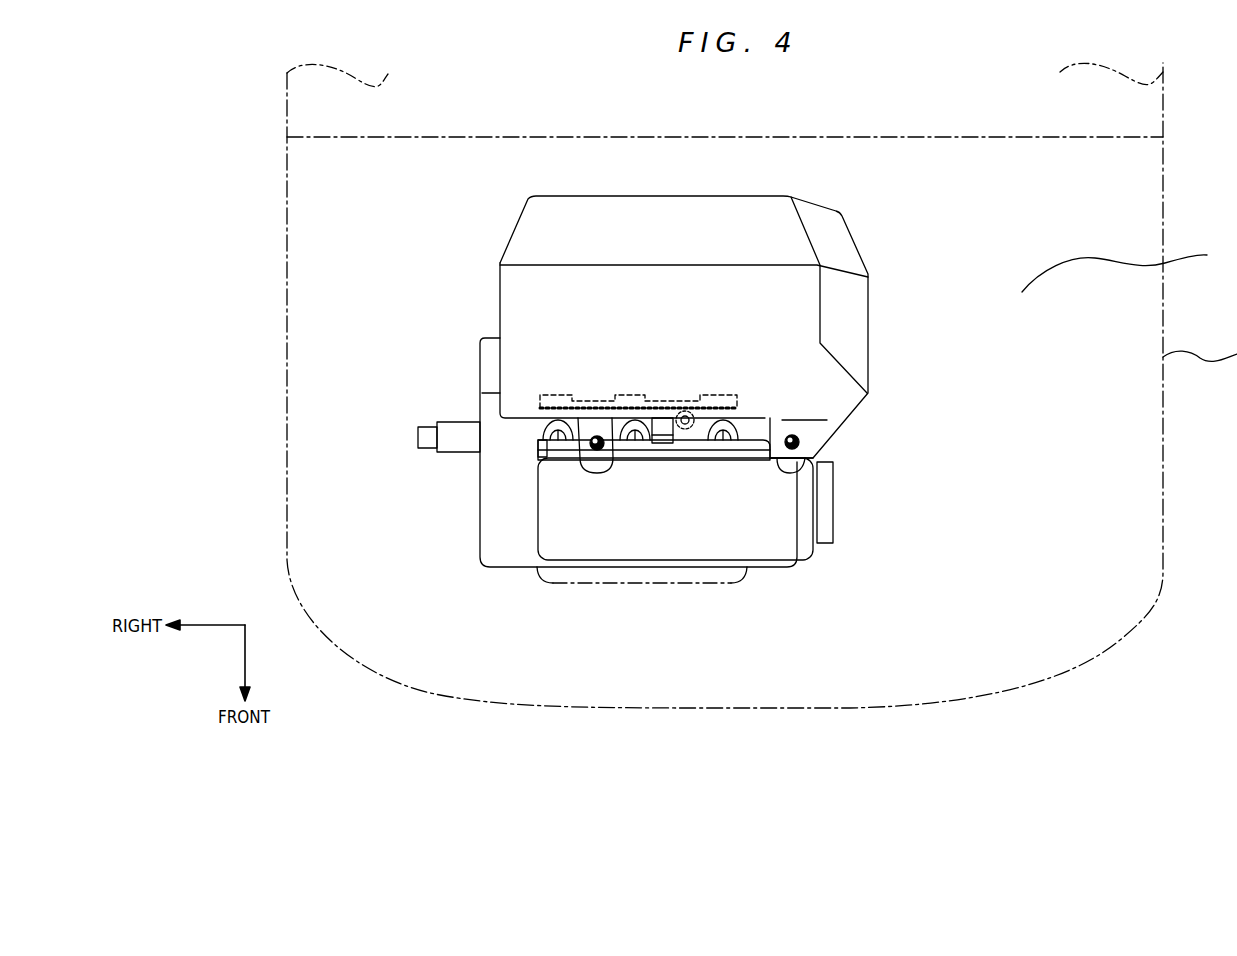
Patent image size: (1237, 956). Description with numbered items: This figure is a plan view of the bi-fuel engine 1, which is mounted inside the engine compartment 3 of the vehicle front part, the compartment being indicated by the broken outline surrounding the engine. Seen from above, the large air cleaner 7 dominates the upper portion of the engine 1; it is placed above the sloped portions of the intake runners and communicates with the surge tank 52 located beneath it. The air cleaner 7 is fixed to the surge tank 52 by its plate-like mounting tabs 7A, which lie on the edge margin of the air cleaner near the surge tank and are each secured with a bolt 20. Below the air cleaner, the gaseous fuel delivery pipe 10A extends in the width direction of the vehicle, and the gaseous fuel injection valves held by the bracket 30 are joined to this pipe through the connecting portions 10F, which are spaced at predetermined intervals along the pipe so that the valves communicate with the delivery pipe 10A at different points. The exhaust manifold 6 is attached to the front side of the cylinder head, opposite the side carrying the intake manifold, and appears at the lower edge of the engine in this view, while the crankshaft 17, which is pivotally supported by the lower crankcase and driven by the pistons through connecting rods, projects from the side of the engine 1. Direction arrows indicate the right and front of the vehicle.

The engine 1 is at (821, 166).
The engine compartment 3 is at (1129, 302).
The exhaust manifold 6 is at (640, 585).
The air cleaner 7 is at (637, 227).
The mounting tab 7A is at (610, 423).
The gaseous fuel delivery pipe 10A is at (740, 452).
The connecting portion 10F is at (558, 418).
The crankshaft 17 is at (457, 423).
The bolt 20 is at (593, 450).
The bracket 30 is at (683, 398).
The surge tank 52 is at (600, 537).